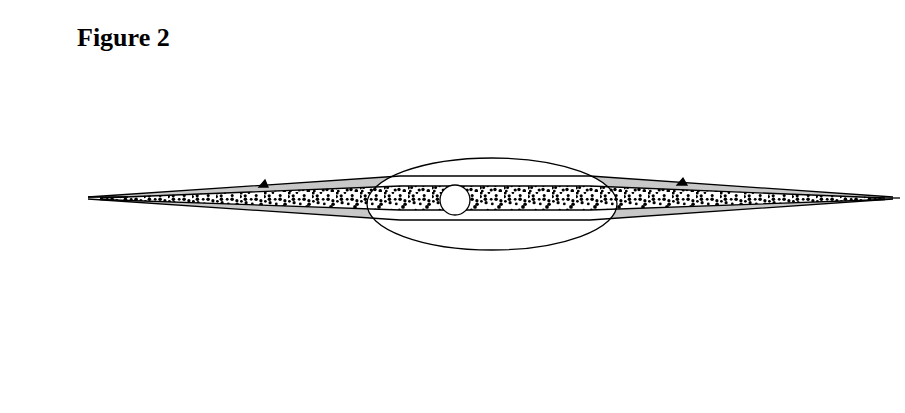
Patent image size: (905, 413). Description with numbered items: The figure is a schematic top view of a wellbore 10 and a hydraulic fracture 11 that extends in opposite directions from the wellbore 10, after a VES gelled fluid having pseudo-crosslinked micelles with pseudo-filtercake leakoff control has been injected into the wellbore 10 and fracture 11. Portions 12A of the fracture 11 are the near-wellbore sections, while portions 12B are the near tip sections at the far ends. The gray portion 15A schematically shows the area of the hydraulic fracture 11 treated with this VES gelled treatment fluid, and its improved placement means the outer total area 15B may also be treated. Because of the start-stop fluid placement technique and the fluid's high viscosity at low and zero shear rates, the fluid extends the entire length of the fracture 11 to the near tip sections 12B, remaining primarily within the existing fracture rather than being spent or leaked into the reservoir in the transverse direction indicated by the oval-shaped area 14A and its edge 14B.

The wellbore 10 is at (468, 190).
The hydraulic fracture 11 is at (262, 183).
The near-wellbore sections 12A is at (415, 206).
The near tip sections 12B is at (182, 207).
The oval-shaped region 14A is at (453, 230).
The edge of total area treated by non-diverting VES fluid 14B is at (421, 176).
The gray portion 15A is at (353, 186).
The outer total area 15B is at (787, 184).